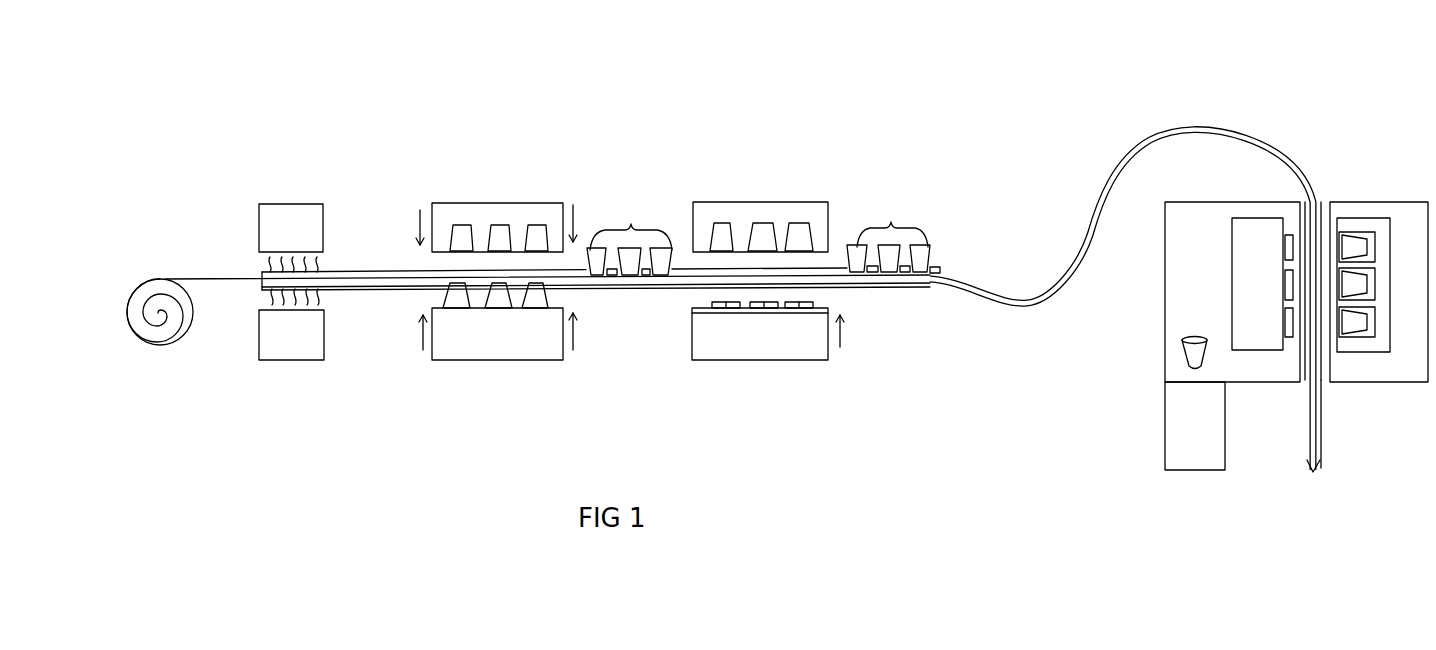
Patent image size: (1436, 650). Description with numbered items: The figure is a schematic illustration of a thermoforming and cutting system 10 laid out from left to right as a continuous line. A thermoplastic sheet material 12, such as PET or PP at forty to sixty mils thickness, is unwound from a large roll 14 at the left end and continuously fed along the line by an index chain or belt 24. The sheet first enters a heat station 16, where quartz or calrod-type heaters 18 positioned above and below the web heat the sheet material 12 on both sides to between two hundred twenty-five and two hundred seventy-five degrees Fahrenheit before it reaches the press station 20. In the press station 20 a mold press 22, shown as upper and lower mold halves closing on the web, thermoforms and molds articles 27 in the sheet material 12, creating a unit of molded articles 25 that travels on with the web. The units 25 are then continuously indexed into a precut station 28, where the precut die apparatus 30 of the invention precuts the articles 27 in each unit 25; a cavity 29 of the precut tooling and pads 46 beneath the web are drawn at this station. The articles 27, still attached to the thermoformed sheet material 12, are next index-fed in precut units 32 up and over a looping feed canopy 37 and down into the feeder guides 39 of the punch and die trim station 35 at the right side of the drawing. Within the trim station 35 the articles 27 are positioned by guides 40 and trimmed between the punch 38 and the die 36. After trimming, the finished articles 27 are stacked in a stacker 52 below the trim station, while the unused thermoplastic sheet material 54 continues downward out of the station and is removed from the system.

The thermoforming and cutting system 10 is at (228, 88).
The thermoplastic sheet material 12 is at (222, 276).
The large roll 14 is at (160, 346).
The heat station 16 is at (277, 184).
The heaters 18 is at (325, 328).
The press station 20 is at (463, 201).
The mold press 22 is at (547, 203).
The index chain or belt 24 is at (260, 292).
The unit of molded articles 25 is at (629, 236).
The articles 27 is at (628, 268).
The precut station 28 is at (763, 197).
The mold cavity 29 is at (798, 232).
The precut die apparatus 30 is at (768, 334).
The precut units 32 is at (893, 235).
The punch and die trim station 35 is at (1253, 203).
The die 36 is at (1273, 303).
The feed canopy 37 is at (1216, 143).
The punch 38 is at (1382, 318).
The feeder guides 39 is at (1327, 202).
The guides 40 is at (1373, 335).
The labels 46 is at (712, 303).
The stacker 52 is at (1208, 425).
The unused thermoplastic sheet material 54 is at (1322, 411).